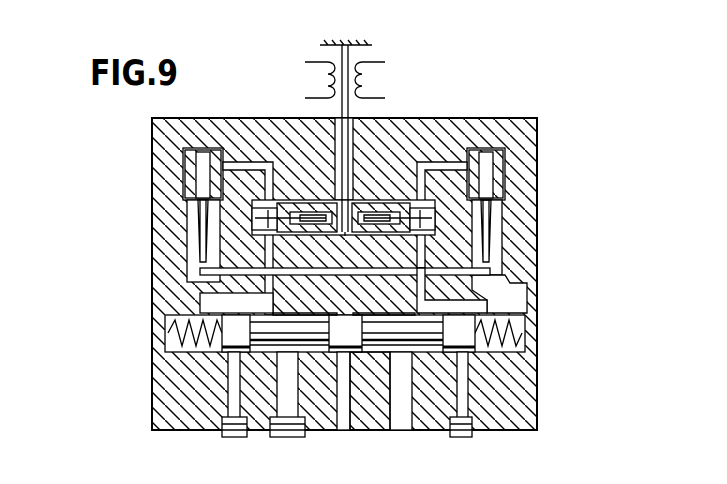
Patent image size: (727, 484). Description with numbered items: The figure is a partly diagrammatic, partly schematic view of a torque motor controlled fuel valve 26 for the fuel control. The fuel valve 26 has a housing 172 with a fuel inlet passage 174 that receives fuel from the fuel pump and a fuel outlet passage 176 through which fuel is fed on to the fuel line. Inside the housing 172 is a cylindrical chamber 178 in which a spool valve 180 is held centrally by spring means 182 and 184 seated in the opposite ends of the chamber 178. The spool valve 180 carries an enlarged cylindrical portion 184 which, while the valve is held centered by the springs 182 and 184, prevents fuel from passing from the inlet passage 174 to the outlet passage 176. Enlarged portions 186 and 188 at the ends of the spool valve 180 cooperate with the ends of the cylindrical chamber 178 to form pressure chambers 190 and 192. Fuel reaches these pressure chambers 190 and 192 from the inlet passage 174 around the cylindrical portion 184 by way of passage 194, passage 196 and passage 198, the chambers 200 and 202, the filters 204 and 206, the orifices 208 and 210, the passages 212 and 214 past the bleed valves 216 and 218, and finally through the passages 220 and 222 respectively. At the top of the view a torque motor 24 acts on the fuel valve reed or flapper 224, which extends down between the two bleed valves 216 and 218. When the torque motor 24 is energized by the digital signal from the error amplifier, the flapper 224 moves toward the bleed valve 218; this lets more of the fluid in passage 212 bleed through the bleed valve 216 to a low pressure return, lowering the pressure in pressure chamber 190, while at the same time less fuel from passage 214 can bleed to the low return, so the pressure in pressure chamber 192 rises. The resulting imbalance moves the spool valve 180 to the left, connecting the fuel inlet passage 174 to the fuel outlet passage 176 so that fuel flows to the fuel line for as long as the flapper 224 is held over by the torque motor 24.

The torque motor 24 is at (368, 58).
The fuel valve 26 is at (58, 339).
The housing 172 is at (538, 118).
The fuel inlet passage 174 is at (343, 425).
The fuel outlet passage 176 is at (402, 415).
The cylindrical chamber 178 is at (276, 316).
The spool valve 180 is at (356, 322).
The spring means 182 is at (165, 340).
The enlarged cylindrical portion 184 is at (543, 313).
The enlarged portion 186 is at (484, 394).
The enlarged portion 188 is at (225, 365).
The pressure chamber 190 is at (162, 314).
The pressure chamber 192 is at (525, 353).
The passage 194 is at (304, 394).
The passage 196 is at (345, 234).
The passage 198 is at (375, 232).
The chamber 200 is at (187, 268).
The chamber 202 is at (510, 284).
The filter 204 is at (190, 222).
The filter 206 is at (505, 262).
The orifice 208 is at (183, 200).
The orifice 210 is at (500, 218).
The passage 212 is at (257, 132).
The passage 214 is at (428, 165).
The bleed valve 216 is at (320, 215).
The bleed valve 218 is at (381, 215).
The passage 220 is at (268, 252).
The passage 222 is at (423, 286).
The fuel valve reed or flapper 224 is at (350, 112).